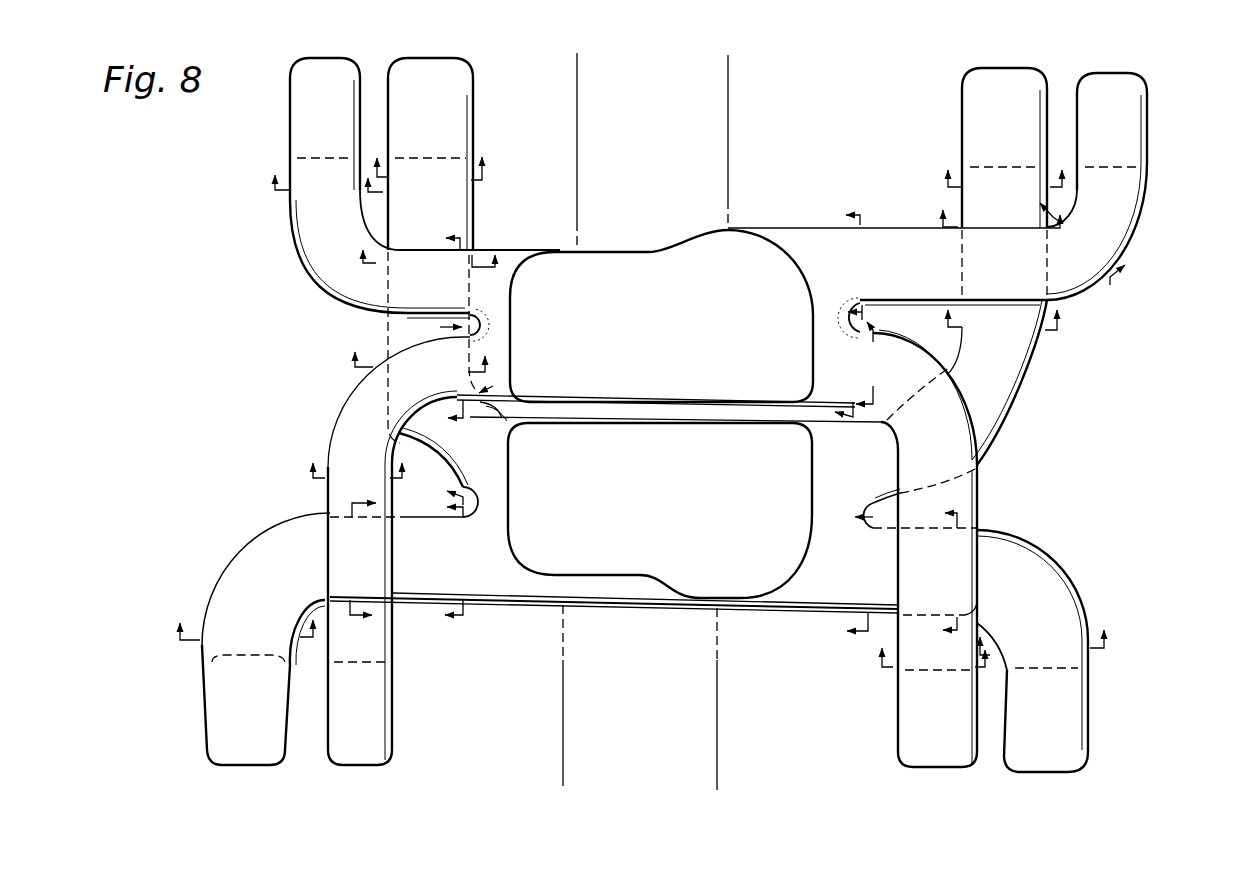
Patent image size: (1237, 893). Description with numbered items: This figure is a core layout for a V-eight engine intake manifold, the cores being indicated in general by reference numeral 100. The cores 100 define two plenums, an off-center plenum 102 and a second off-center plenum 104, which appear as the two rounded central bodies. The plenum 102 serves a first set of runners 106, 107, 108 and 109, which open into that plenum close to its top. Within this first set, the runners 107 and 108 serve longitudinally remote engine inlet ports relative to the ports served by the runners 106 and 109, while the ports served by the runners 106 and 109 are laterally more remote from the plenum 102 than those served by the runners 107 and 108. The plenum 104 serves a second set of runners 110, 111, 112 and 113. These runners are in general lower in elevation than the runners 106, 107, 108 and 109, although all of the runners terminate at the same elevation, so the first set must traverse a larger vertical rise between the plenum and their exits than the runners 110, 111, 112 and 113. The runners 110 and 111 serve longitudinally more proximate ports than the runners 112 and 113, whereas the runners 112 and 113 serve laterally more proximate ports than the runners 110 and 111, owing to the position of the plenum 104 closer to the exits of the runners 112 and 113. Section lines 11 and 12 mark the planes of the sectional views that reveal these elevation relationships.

The cores 100 is at (742, 205).
The off-center plenum 102 is at (678, 351).
The off-center plenum 104 is at (676, 510).
The runner 106 is at (365, 400).
The runner 107 is at (330, 262).
The runner 108 is at (895, 237).
The runner 109 is at (950, 412).
The runner 110 is at (472, 213).
The runner 111 is at (1037, 372).
The runner 112 is at (1037, 567).
The runner 113 is at (410, 600).
The section line 11- 11 is at (577, 53).
The section line 12- 12 is at (728, 55).